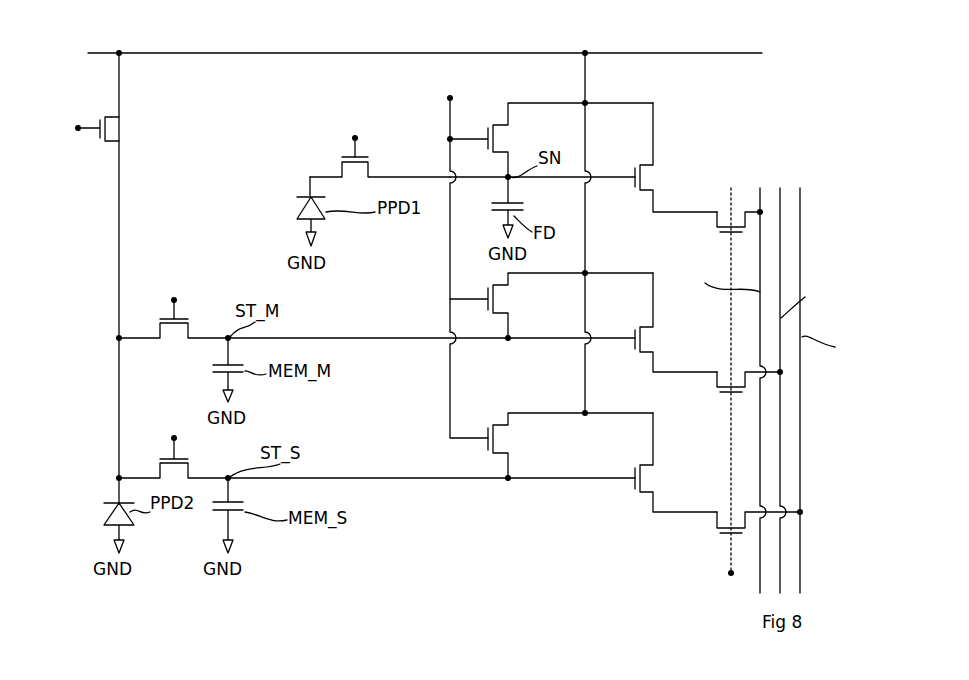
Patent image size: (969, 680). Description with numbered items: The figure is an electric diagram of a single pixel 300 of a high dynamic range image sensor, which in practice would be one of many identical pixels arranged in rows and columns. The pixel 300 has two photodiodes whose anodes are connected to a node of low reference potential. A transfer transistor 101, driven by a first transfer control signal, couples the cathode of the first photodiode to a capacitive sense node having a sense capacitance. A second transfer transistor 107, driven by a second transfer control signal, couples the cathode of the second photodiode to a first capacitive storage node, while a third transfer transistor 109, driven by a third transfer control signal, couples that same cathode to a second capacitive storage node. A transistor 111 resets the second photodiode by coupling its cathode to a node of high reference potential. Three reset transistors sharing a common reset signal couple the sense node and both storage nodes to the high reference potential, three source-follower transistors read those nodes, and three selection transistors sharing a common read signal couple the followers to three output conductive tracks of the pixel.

The pixel 300 is at (222, 37).
The transistor for resetting photodiode PPD2 111 is at (110, 143).
The transfer transistor 101 is at (340, 160).
The transfer transistor 107 is at (190, 329).
The transfer transistor 109 is at (190, 470).